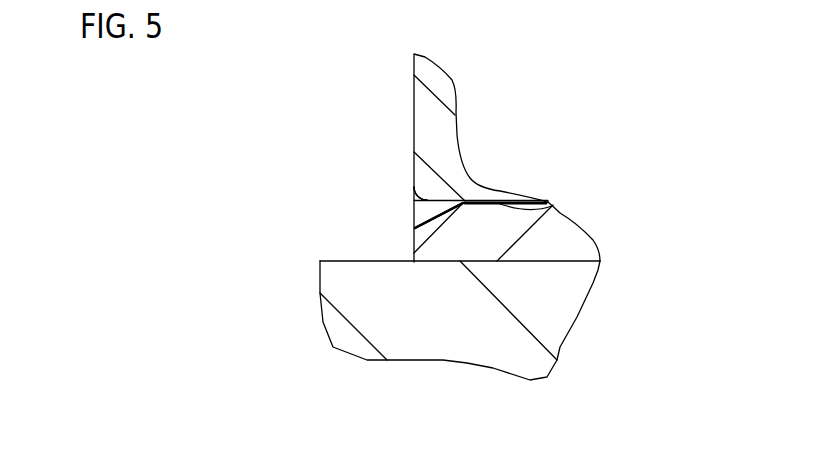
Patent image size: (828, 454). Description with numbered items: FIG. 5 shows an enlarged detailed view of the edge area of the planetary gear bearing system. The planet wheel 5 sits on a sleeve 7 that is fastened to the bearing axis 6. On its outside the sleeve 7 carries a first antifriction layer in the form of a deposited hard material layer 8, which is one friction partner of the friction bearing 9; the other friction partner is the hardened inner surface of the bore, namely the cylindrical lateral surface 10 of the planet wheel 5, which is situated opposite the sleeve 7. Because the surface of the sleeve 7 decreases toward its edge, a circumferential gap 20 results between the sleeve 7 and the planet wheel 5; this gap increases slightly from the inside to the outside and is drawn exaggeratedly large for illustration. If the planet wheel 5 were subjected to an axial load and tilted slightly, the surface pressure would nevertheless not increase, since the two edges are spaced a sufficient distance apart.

The planet wheel 5 is at (435, 132).
The bearing axis 6 is at (565, 290).
The sleeve 7 is at (568, 238).
The hard material layer 8 is at (553, 208).
The friction bearing 9 is at (515, 178).
The cylindrical lateral surface of the bore 10 is at (418, 184).
The circumferential gap 20 is at (430, 208).